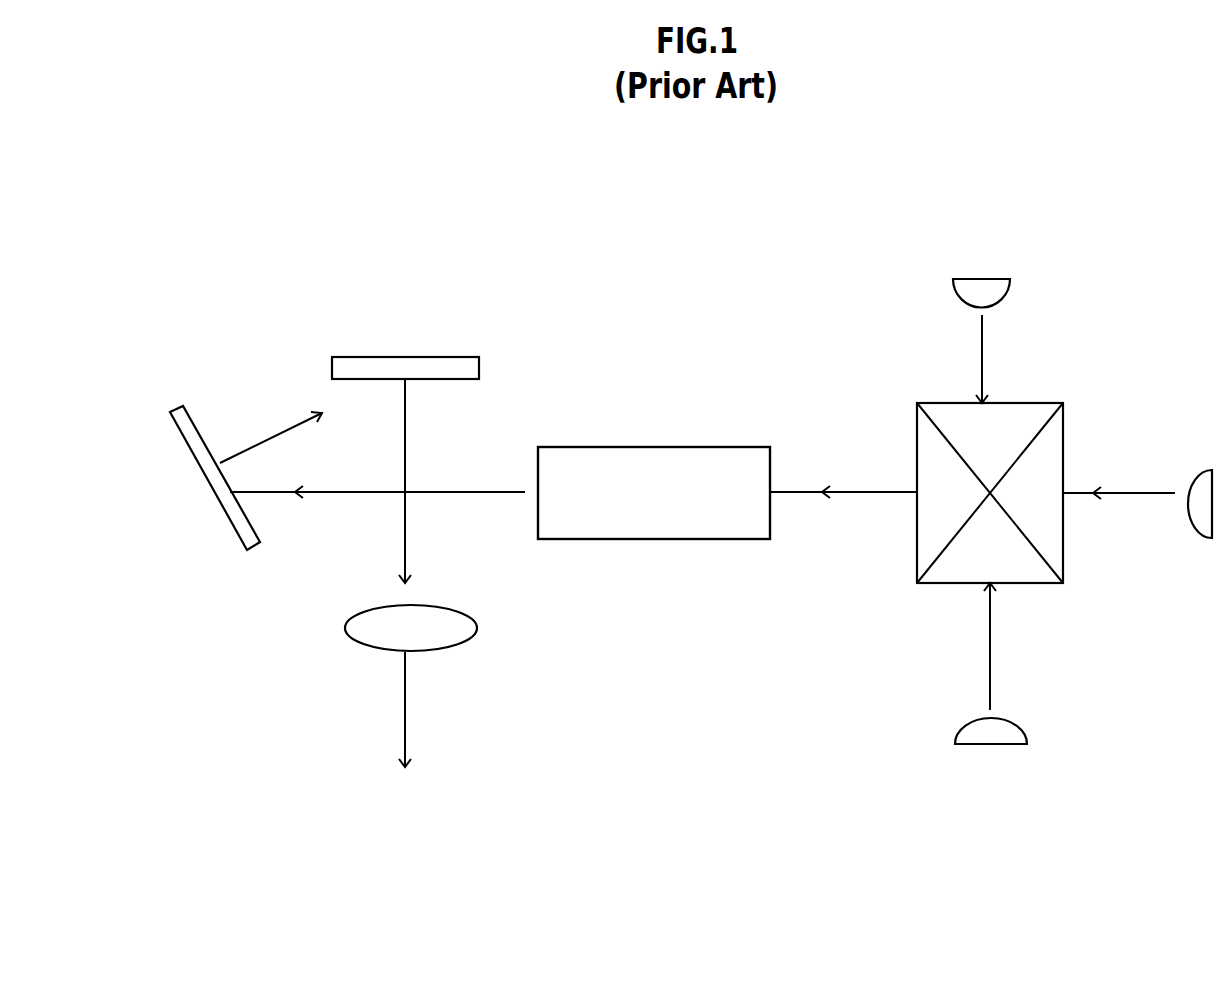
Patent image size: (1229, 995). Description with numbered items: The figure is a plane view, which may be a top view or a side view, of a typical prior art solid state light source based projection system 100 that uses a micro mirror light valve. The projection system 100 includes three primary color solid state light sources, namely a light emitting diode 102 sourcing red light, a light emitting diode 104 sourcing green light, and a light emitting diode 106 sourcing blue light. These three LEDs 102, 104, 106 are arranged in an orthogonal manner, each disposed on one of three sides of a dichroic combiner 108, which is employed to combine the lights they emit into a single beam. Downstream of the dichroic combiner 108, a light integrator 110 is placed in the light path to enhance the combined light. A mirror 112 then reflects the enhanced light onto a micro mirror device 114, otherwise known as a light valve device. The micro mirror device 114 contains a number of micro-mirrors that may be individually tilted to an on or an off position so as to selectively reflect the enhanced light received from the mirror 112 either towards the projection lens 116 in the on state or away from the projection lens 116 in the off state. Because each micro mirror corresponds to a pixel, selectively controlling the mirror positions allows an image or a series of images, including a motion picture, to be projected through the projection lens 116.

The solid state light source based projection system 100 is at (718, 195).
The light emitting diode 102 is at (1193, 528).
The light emitting diode 104 is at (955, 742).
The light emitting diode 106 is at (963, 295).
The dichroic combiner 108 is at (1063, 583).
The light integrator 110 is at (692, 447).
The mirror 112 is at (178, 420).
The micro mirror device 114 is at (362, 357).
The projection lens 116 is at (347, 625).